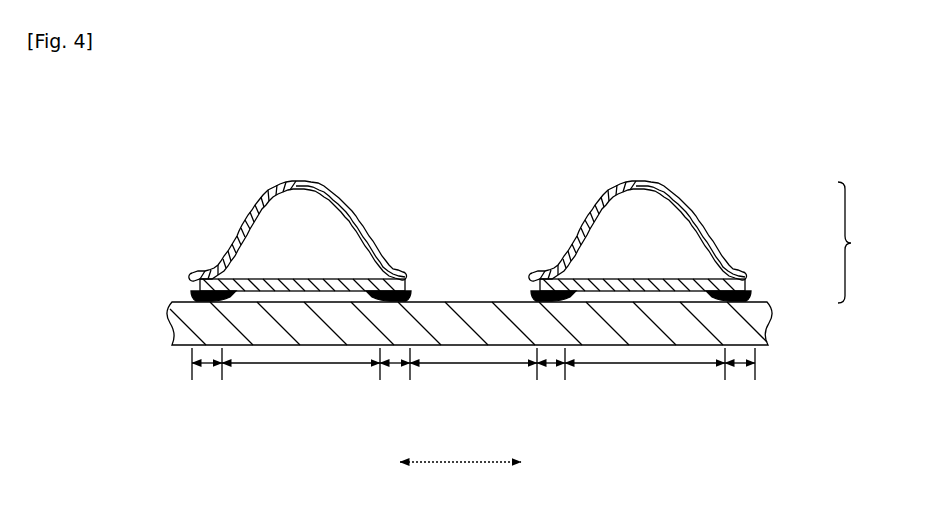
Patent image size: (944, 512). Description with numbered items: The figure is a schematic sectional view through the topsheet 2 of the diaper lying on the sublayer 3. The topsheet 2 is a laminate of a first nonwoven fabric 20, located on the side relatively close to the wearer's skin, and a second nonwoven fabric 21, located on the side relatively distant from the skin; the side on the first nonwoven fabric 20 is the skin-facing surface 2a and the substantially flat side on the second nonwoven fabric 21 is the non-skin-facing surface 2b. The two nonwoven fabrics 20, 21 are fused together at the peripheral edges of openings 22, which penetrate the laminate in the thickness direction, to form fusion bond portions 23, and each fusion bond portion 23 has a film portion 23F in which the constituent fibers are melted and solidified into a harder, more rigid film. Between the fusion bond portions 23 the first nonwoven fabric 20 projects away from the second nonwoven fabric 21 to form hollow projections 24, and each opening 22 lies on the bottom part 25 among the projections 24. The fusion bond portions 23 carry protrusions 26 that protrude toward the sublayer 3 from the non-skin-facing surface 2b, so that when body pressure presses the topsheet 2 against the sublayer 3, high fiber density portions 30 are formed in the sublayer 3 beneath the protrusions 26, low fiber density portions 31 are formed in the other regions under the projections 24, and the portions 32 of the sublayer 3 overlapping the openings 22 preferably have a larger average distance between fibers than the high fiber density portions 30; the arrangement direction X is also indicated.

The topsheet 2 is at (853, 242).
The skin-facing surface 2a is at (218, 143).
The non-skin-facing surface 2b is at (700, 300).
The sublayer 3 is at (770, 321).
The first nonwoven fabric 20 is at (468, 198).
The second nonwoven fabric 21 is at (301, 286).
The opening 22 is at (467, 300).
The fusion bond portion 23 is at (486, 181).
The film portion 23F is at (185, 291).
The projection 24 is at (300, 182).
The bottom part 25 is at (482, 232).
The protrusion 26 is at (473, 250).
The high fiber density portion 30 is at (207, 366).
The low fiber density portion 31 is at (300, 366).
The portion overlapping with the opening 32 is at (475, 366).
The arrangement direction X is at (460, 477).